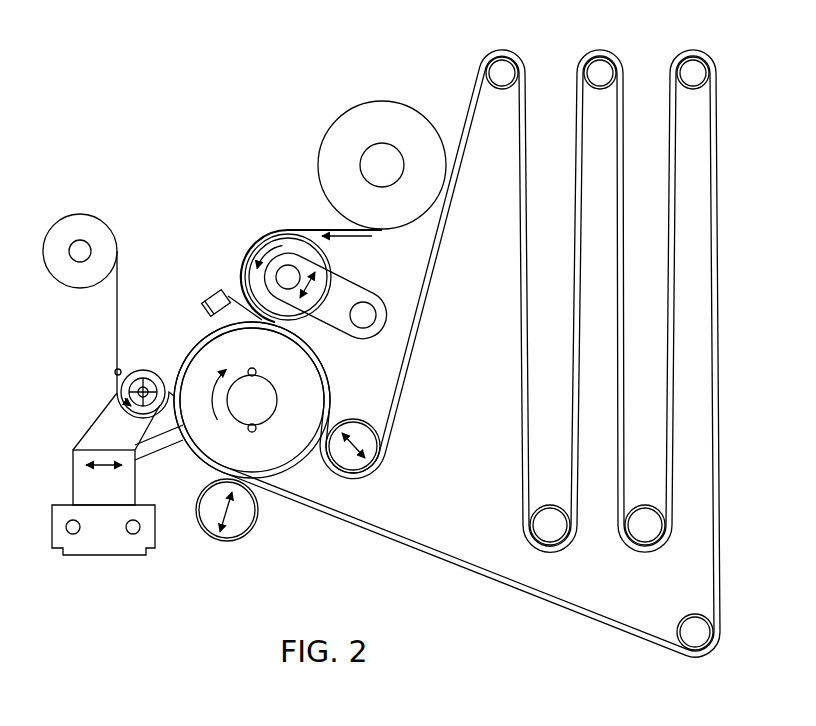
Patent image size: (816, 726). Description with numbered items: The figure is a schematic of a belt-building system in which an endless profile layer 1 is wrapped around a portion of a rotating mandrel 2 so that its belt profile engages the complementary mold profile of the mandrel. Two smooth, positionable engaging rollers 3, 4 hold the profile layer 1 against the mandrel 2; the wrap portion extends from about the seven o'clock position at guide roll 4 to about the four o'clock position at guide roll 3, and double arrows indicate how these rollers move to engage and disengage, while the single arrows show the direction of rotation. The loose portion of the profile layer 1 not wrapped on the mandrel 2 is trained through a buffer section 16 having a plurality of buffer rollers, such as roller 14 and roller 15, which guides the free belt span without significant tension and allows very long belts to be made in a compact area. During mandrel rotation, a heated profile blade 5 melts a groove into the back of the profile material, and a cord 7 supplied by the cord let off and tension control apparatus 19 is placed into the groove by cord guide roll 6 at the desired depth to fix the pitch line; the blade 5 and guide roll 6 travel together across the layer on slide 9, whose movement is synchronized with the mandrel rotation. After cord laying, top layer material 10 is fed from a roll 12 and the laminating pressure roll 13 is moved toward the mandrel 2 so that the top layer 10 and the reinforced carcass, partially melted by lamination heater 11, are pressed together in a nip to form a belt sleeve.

The endless profile layer 1 is at (425, 312).
The mandrel 2 is at (318, 400).
The engaging roller 3 is at (368, 466).
The engaging roller 4 is at (246, 517).
The heated profile blade 5 is at (146, 462).
The cord guide roll 6 is at (152, 372).
The cord 7 is at (115, 373).
The slide 9 is at (113, 557).
The top layer material 10 is at (323, 228).
The lamination heater 11 is at (213, 296).
The supply roll 12 is at (400, 140).
The laminating pressure roll 13 is at (330, 262).
The buffer roller 14 is at (506, 62).
The buffer roller 15 is at (680, 622).
The buffer section 16 is at (640, 40).
The cord let off and tension control apparatus 19 is at (102, 230).